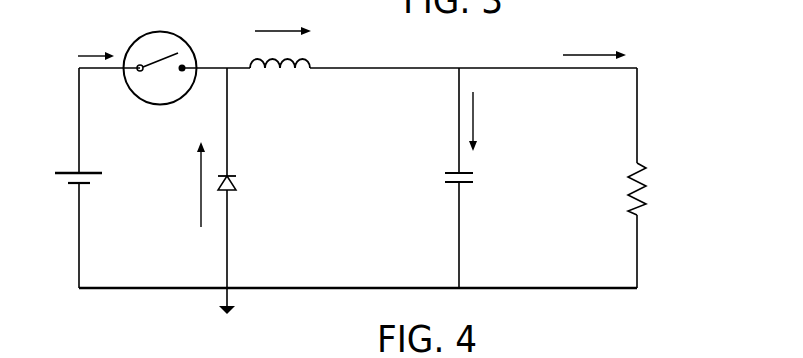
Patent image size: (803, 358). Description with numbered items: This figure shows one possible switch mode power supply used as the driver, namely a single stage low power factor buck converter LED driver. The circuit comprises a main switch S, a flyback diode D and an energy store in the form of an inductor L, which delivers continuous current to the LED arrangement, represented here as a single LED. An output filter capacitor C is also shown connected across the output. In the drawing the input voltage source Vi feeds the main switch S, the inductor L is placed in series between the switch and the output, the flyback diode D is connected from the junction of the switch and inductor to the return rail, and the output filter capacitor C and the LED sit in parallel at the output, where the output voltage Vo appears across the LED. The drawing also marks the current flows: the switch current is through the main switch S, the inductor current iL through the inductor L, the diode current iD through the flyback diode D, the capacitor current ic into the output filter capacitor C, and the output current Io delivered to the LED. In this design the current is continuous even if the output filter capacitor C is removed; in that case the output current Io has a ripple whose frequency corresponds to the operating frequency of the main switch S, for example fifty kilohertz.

The main switch S is at (160, 52).
The inductor L is at (280, 84).
The flyback diode D is at (240, 182).
The output filter capacitor C is at (447, 177).
The LED arrangement LED is at (600, 189).
The input voltage source Vi is at (65, 184).
The output voltage Vo is at (671, 194).
The switch current is is at (96, 44).
The inductor current iL is at (283, 20).
The diode current iD is at (191, 184).
The capacitor current ic is at (481, 125).
The output current Io is at (594, 44).